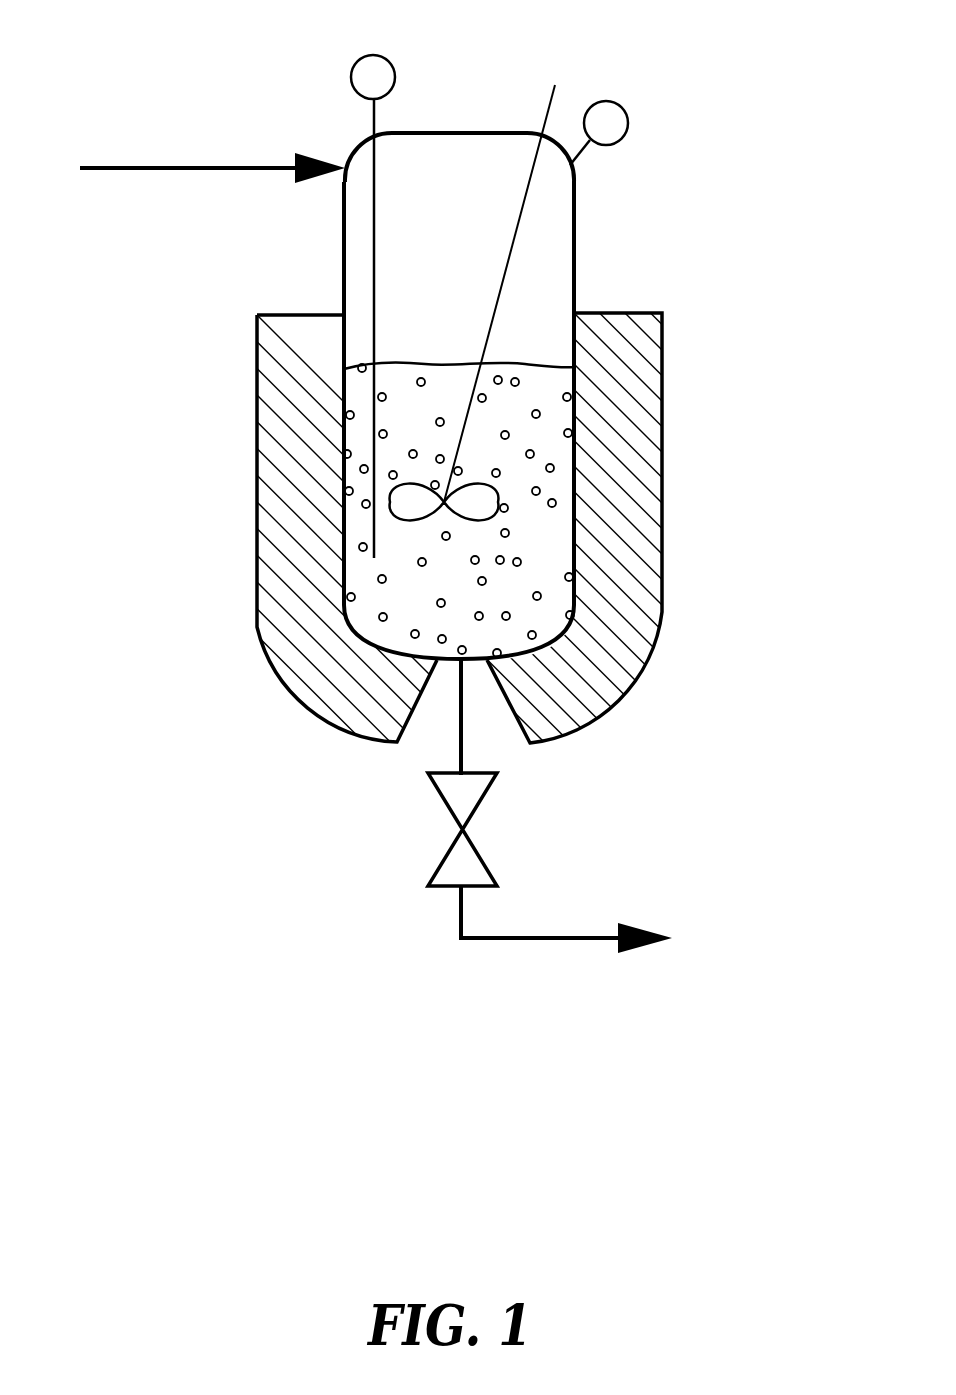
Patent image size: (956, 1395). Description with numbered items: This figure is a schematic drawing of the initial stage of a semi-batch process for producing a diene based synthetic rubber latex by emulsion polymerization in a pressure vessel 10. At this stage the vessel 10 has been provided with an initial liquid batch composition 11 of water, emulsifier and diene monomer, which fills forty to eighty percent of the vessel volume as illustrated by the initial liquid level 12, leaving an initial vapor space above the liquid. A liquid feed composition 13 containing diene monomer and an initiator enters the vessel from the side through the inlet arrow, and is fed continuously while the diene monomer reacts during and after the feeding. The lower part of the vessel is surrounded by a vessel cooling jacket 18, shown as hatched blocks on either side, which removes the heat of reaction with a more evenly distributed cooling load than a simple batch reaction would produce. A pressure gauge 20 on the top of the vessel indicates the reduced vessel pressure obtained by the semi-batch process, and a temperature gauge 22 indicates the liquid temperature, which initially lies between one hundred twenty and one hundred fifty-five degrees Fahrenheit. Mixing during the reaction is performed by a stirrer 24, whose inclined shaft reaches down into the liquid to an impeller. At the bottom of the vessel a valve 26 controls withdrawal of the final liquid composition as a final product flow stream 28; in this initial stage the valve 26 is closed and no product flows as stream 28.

The pressure vessel 10 is at (645, 240).
The initial liquid batch composition 11 is at (408, 600).
The initial liquid level 12 is at (390, 365).
The liquid feed composition 13 is at (128, 167).
The vessel cooling jacket 18 is at (655, 422).
The pressure gauge 20 is at (628, 110).
The temperature gauge 22 is at (376, 112).
The stirrer 24 is at (552, 115).
The valve 26 is at (467, 829).
The final product flow stream 28 is at (543, 937).